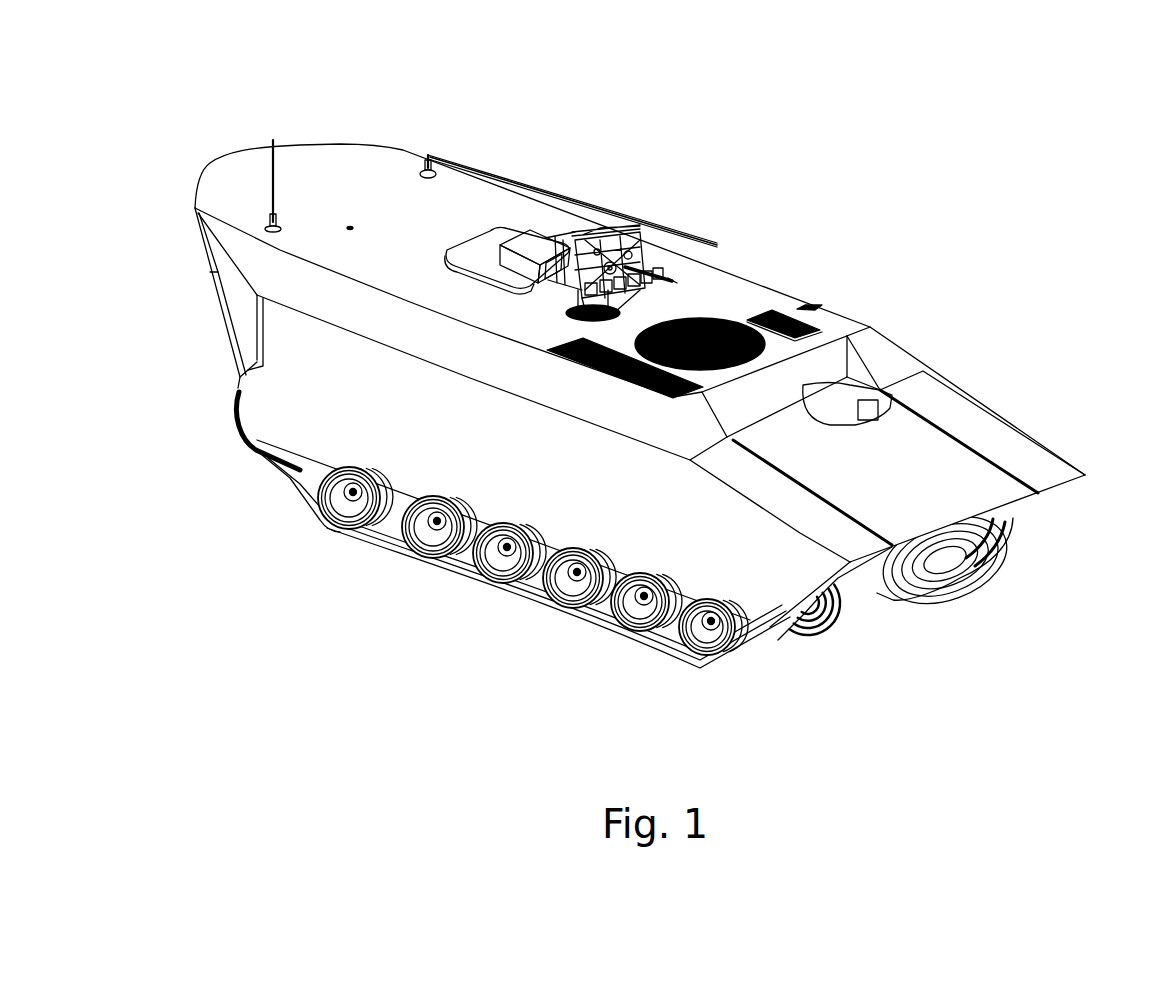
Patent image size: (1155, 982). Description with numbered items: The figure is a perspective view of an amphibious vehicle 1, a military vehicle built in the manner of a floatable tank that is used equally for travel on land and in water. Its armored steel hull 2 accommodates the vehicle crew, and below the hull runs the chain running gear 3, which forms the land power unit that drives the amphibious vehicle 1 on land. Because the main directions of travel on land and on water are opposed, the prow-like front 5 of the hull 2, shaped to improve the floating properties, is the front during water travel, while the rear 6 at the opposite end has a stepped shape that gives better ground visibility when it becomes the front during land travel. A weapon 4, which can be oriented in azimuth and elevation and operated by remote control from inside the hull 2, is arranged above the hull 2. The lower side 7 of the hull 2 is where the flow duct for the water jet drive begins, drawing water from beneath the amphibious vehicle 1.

The amphibious vehicle 1 is at (560, 121).
The hull 2 is at (892, 507).
The chain running gear 3 is at (327, 528).
The weapon 4 is at (640, 252).
The front 5 is at (175, 216).
The rear 6 is at (1062, 567).
The lower side 7 is at (488, 654).